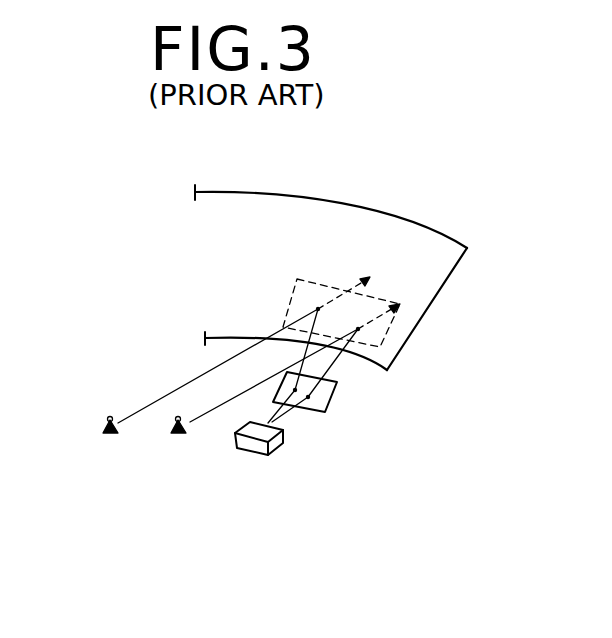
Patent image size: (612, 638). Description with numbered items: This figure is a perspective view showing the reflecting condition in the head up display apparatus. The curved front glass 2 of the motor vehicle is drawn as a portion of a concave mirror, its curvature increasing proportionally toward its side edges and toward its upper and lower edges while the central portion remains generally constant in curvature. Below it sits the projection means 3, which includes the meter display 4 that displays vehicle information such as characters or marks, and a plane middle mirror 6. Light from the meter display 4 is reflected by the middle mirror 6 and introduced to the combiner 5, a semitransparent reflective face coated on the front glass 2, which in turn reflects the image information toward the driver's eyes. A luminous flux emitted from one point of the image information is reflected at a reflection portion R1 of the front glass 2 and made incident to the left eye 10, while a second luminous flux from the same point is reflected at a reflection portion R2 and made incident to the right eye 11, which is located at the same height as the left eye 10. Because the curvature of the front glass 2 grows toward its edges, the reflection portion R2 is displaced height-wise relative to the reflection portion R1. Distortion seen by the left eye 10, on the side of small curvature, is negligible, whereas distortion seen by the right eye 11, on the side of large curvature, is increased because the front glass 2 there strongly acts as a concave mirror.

The front glass 2 is at (400, 232).
The projection means 3 is at (279, 480).
The meter display 4 is at (243, 447).
The combiner 5 is at (284, 311).
The middle mirror 6 is at (323, 410).
The left eye 10 is at (101, 432).
The right eye 11 is at (169, 432).
The reflection portion R1 is at (318, 309).
The reflection portion R2 is at (358, 329).